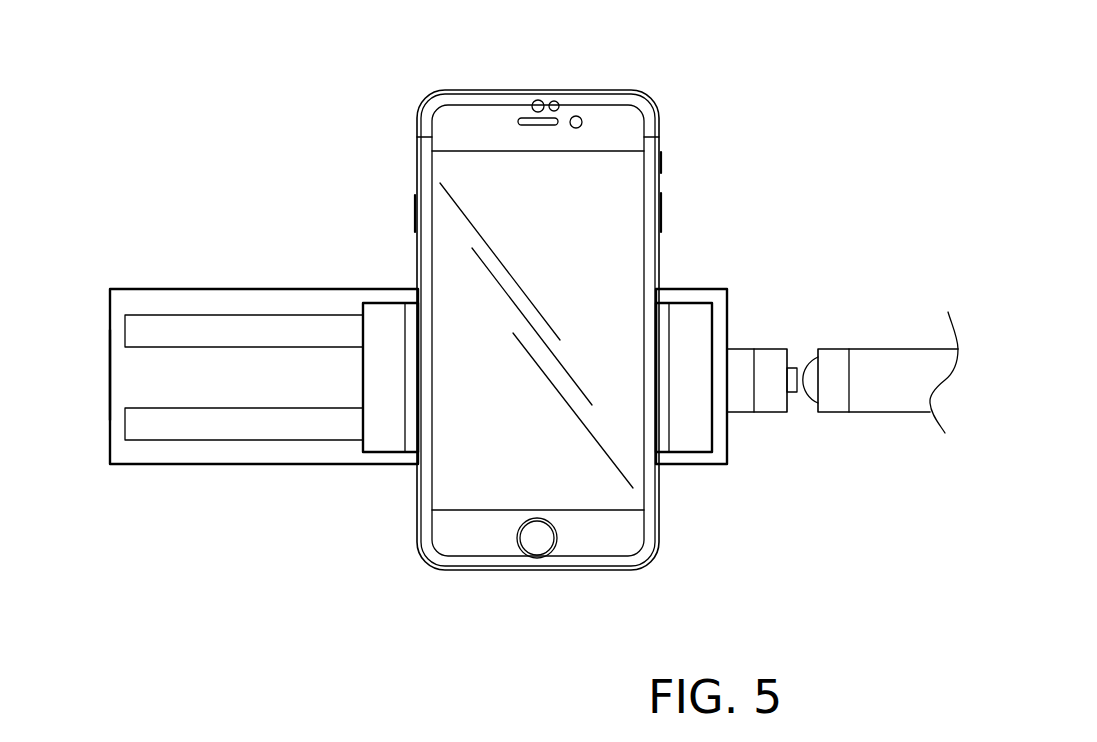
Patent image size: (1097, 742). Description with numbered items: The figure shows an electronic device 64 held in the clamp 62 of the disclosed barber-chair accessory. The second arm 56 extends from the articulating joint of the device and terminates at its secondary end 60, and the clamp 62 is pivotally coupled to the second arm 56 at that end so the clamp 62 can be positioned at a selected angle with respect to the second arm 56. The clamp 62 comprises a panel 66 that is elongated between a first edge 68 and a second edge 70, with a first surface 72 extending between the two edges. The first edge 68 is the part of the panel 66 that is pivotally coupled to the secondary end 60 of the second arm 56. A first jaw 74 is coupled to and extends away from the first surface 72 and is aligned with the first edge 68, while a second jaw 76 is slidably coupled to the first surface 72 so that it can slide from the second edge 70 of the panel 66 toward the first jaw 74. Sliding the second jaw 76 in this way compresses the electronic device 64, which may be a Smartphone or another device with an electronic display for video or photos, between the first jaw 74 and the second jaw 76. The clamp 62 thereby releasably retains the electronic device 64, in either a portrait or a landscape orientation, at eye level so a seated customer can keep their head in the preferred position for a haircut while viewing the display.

The second arm 56 is at (897, 349).
The secondary end 60 is at (812, 368).
The clamp 62 is at (419, 400).
The electronic device 64 is at (642, 95).
The panel 66 is at (110, 289).
The first edge 68 is at (728, 297).
The second edge 70 is at (110, 365).
The first surface 72 is at (226, 380).
The first jaw 74 is at (690, 443).
The second jaw 76 is at (380, 445).